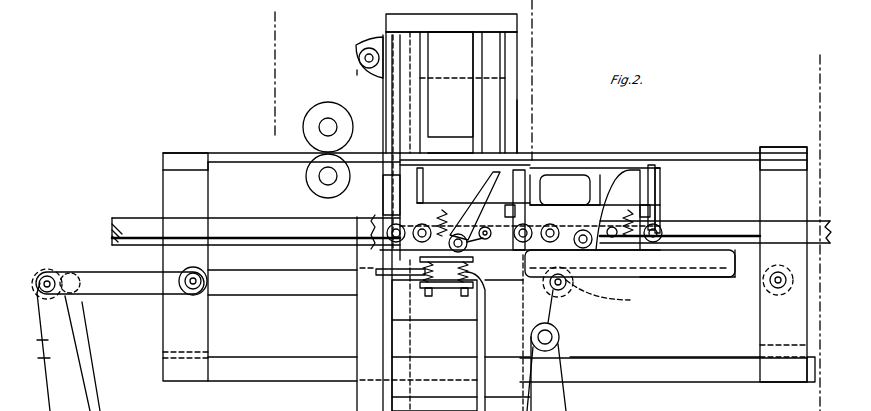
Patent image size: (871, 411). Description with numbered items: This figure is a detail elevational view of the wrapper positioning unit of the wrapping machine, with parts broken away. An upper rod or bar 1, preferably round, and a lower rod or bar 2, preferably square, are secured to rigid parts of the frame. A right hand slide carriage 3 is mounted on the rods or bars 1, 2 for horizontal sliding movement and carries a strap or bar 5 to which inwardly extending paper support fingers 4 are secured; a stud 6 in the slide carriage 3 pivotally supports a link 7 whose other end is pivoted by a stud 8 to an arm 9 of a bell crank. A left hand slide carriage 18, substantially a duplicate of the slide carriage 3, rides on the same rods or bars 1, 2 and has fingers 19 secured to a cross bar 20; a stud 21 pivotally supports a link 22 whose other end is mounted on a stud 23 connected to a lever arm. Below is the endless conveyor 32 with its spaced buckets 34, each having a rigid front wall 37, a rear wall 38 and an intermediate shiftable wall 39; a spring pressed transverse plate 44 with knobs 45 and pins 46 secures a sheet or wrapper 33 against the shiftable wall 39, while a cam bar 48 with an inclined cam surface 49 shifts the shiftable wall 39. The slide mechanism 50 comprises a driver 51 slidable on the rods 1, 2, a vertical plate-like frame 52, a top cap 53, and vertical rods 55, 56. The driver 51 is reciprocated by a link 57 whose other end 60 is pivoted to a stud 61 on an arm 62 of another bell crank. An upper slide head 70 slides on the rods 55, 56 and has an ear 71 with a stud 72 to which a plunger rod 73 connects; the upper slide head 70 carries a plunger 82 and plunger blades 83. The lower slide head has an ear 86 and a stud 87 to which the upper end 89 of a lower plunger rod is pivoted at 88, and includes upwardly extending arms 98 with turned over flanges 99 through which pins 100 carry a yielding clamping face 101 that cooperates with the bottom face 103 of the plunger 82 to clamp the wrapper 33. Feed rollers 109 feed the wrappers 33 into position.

The upper rod or bar 1 is at (126, 222).
The lower rod or bar 2 is at (695, 358).
The right hand slide carriage 3 is at (795, 73).
The fingers 4 is at (677, 153).
The strap or bar 5 is at (519, 4).
The stud 6 is at (262, 17).
The link 7 is at (687, 278).
The stud 8 is at (566, 288).
The arm 9 is at (562, 337).
The left hand slide carriage 18 is at (162, 182).
The fingers 19 is at (250, 152).
The cross bar 20 is at (210, 170).
The stud 21 is at (210, 292).
The link 22 is at (134, 296).
The stud 23 is at (40, 270).
The endless conveyor 32 is at (589, 163).
The sheet or wrapper 33 is at (530, 172).
The bucket 34 is at (384, 185).
The front wall 37 is at (424, 188).
The rear wall 38 is at (560, 160).
The shiftable wall 39 is at (492, 172).
The transverse plate 44 is at (600, 190).
The buttons or knobs 45 is at (516, 172).
The pins 46 is at (656, 212).
The cam bar 48 is at (665, 277).
The inclined cam surface 49 is at (515, 250).
The slide mechanism 50 is at (527, 52).
The driver 51 is at (585, 270).
The plate-like frame 52 is at (512, 118).
The top cap 53 is at (462, 34).
The vertical rod 55 is at (517, 20).
The vertical rod 56 is at (386, 16).
The link 57 is at (298, 292).
The other end of link 60 is at (112, 276).
The stud 61 is at (72, 270).
The arm 62 is at (86, 336).
The upper slide head 70 is at (517, 48).
The ear 71 is at (362, 48).
The stud 72 is at (356, 52).
The link or plunger rod 73 is at (357, 70).
The plunger 82 is at (480, 93).
The plunger blades 83 is at (505, 105).
The ear 86 is at (600, 344).
The stud 87 is at (565, 345).
The pivot 88 is at (494, 333).
The upper end of link or lower plunger rod 89 is at (530, 348).
The upwardly extending arms 98 is at (420, 410).
The turned over flanges 99 is at (447, 290).
The pins 100 is at (400, 270).
The clamping face 101 is at (430, 257).
The bottom face of plunger 103 is at (455, 155).
The feed rollers 109 is at (307, 118).